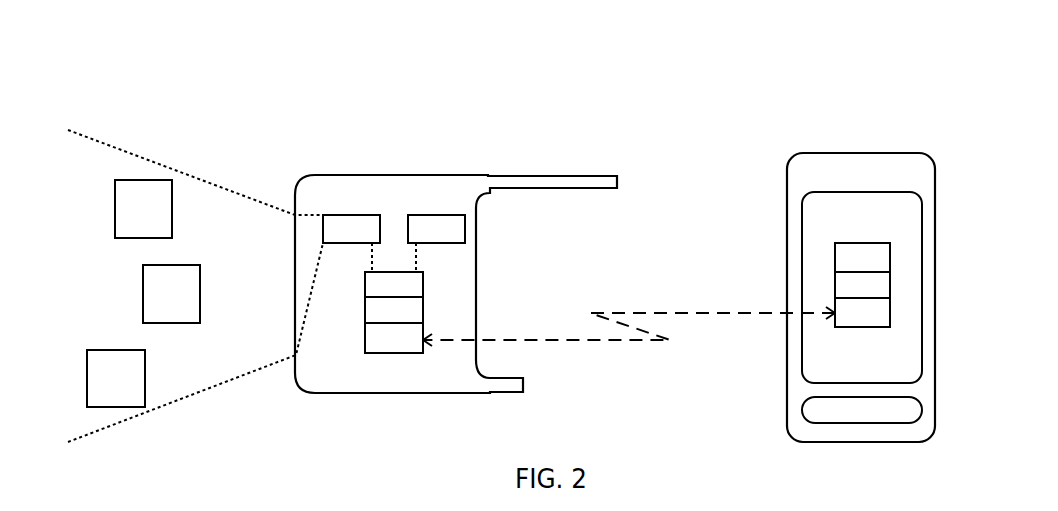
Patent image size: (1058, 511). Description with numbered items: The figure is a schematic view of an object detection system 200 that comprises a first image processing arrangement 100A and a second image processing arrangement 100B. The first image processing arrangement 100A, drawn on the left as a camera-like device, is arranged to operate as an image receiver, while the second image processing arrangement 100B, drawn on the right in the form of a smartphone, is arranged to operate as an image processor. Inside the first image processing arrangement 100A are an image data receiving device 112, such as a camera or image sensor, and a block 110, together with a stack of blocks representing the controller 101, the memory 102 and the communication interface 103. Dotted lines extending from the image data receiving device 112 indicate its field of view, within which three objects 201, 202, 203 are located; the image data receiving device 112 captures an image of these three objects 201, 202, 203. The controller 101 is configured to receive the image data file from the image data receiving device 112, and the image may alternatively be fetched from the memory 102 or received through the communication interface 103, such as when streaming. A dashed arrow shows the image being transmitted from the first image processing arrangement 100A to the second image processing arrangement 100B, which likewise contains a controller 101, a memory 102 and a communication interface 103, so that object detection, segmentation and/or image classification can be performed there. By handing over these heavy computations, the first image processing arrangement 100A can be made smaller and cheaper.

The object detection system 200 is at (591, 101).
The first image processing arrangement 100A is at (400, 173).
The second image processing arrangement 100B is at (790, 158).
The controller 101 is at (627, 270).
The memory 102 is at (627, 297).
The communication interface 103 is at (627, 325).
The processor 110 is at (436, 229).
The image data receiving device 112 is at (351, 229).
The object 201 is at (143, 209).
The object 202 is at (171, 294).
The object 203 is at (116, 378).